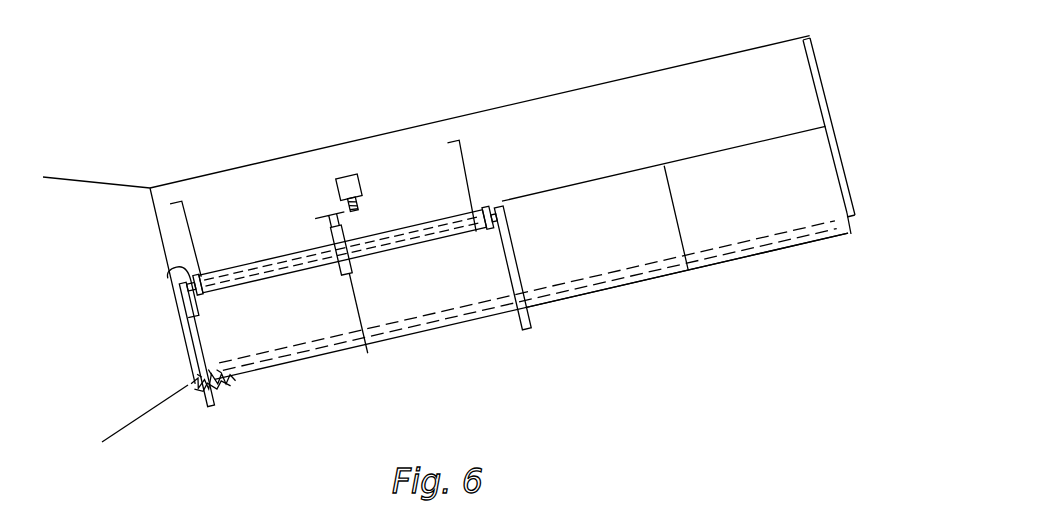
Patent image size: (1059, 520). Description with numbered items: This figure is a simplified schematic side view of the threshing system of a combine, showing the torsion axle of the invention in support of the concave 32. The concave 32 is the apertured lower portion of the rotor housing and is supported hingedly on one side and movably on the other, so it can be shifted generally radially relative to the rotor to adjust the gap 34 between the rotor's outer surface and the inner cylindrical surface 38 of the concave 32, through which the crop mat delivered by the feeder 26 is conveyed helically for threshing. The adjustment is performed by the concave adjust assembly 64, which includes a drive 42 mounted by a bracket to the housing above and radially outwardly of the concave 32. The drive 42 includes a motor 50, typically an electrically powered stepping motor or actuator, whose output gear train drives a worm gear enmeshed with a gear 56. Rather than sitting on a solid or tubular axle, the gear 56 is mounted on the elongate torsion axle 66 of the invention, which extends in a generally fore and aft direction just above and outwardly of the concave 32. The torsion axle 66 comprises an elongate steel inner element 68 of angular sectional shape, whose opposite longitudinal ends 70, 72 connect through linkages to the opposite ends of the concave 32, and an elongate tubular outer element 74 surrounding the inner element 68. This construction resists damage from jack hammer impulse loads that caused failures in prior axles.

The feeder 26 is at (320, 345).
The inner cylindrical surface 38 is at (320, 400).
The gap 34 is at (432, 325).
The concave 32 is at (240, 387).
The drive 42 is at (344, 221).
The motor 50 is at (362, 187).
The gear 56 is at (327, 240).
The concave adjust assembly 64 is at (358, 168).
The torsion axle 66 is at (230, 268).
The inner element 68 is at (166, 272).
The longitudinal end 70 is at (180, 326).
The longitudinal end 72 is at (492, 208).
The outer element 74 is at (282, 276).